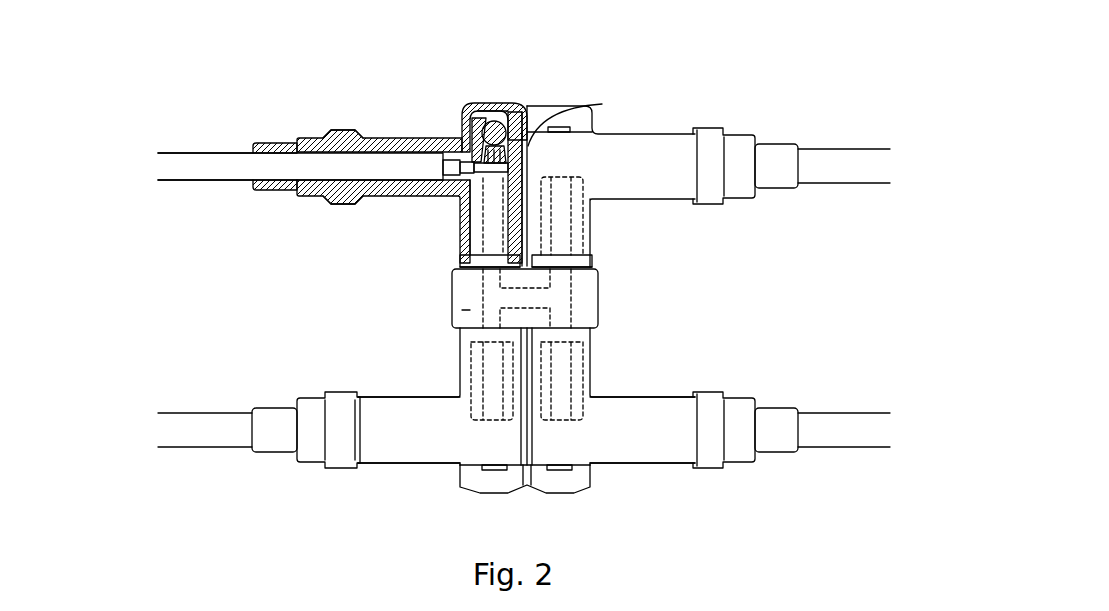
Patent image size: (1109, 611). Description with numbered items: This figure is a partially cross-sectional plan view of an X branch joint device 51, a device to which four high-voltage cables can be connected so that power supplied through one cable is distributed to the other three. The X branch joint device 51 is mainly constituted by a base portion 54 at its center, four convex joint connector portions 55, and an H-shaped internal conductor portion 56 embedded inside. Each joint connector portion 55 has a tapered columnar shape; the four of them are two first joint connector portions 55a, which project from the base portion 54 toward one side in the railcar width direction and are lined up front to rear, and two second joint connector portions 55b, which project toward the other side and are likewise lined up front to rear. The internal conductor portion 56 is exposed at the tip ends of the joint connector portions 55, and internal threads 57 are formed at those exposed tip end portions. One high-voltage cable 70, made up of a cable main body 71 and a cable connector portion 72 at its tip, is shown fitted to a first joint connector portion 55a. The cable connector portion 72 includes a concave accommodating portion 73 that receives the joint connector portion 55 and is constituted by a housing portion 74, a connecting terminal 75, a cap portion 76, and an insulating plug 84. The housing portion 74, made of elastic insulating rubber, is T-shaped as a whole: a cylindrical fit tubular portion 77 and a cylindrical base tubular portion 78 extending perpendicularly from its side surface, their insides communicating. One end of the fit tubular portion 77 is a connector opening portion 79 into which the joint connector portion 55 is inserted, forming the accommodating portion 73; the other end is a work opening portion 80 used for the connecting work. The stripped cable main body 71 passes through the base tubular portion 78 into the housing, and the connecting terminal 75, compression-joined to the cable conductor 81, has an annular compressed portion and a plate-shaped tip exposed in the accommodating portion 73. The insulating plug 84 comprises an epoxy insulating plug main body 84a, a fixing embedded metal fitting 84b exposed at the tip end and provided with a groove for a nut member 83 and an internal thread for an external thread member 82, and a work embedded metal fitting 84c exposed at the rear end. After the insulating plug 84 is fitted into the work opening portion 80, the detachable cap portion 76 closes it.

The X branch joint device 51 is at (526, 346).
The base portion 54 is at (598, 305).
The joint connector portion 55 is at (522, 298).
The first joint connector portion 55a is at (466, 251).
The second joint connector portion 55b is at (470, 370).
The internal conductor portion 56 is at (462, 315).
The internal thread 57 is at (458, 215).
The high-voltage cable 70 is at (194, 153).
The cable main body 71 is at (217, 160).
The cable connector portion 72 is at (316, 137).
The accommodating portion 73 is at (475, 243).
The housing portion 74 is at (367, 140).
The connecting terminal 75 is at (456, 159).
The cap portion 76 is at (518, 108).
The fit tubular portion 77 is at (526, 110).
The base tubular portion 78 is at (276, 145).
The connector opening portion 79 is at (470, 270).
The work opening portion 80 is at (514, 106).
The cable conductor 81 is at (467, 162).
The external thread member 82 is at (492, 113).
The nut member 83 is at (476, 118).
The insulating plug 84 is at (482, 113).
The insulating plug main body 84a is at (530, 124).
The fixing embedded metal fitting 84b is at (579, 115).
The work embedded metal fitting 84c is at (497, 110).